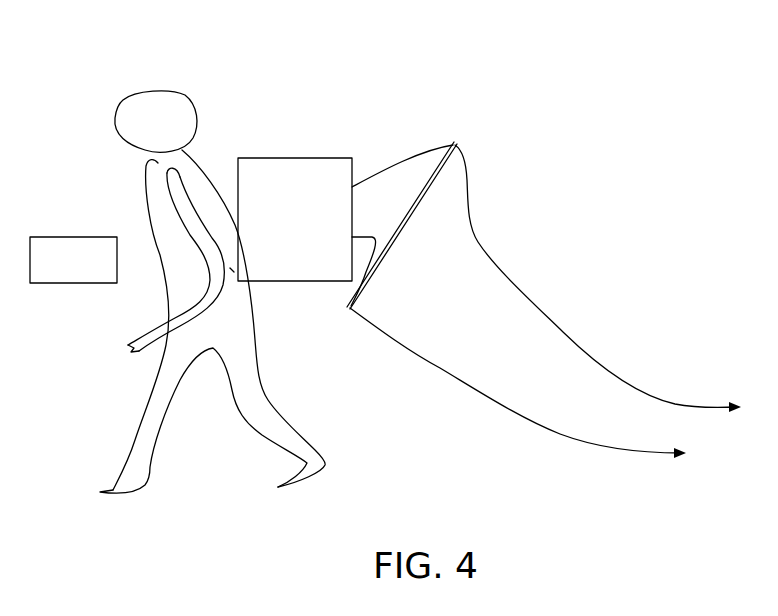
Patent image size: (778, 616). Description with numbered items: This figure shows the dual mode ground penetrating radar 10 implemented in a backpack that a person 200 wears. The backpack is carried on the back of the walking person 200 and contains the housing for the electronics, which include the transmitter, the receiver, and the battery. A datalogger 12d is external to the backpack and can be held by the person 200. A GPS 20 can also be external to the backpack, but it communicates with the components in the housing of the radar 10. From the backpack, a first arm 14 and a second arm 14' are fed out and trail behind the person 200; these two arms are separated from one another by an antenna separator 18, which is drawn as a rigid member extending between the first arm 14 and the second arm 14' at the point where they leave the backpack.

The person 200 is at (108, 95).
The GPS 20 is at (232, 270).
The dual mode ground penetrating radar 10 is at (307, 238).
The datalogger 12d is at (85, 270).
The antenna separator 18 is at (402, 225).
The first arm 14 is at (546, 278).
The second arm 14' is at (518, 347).